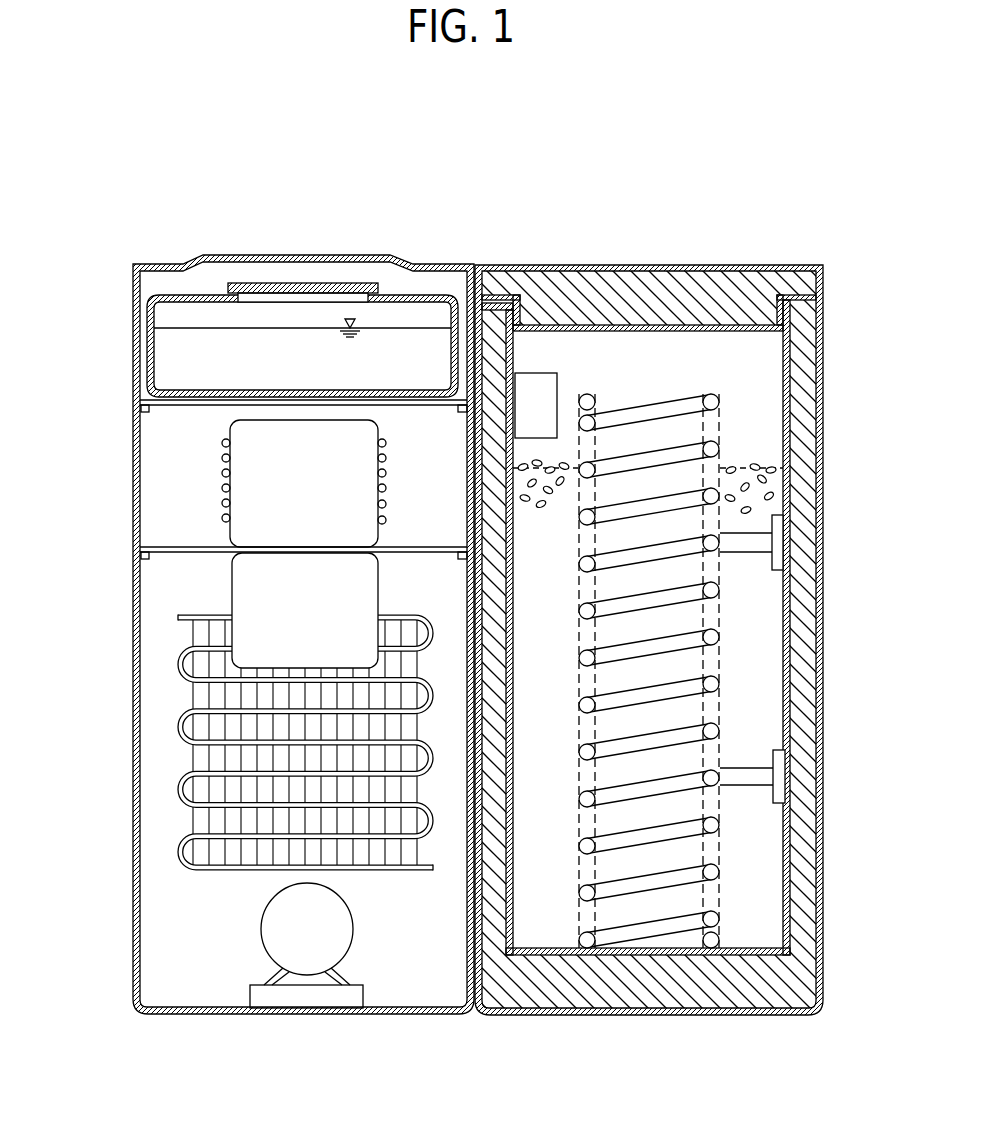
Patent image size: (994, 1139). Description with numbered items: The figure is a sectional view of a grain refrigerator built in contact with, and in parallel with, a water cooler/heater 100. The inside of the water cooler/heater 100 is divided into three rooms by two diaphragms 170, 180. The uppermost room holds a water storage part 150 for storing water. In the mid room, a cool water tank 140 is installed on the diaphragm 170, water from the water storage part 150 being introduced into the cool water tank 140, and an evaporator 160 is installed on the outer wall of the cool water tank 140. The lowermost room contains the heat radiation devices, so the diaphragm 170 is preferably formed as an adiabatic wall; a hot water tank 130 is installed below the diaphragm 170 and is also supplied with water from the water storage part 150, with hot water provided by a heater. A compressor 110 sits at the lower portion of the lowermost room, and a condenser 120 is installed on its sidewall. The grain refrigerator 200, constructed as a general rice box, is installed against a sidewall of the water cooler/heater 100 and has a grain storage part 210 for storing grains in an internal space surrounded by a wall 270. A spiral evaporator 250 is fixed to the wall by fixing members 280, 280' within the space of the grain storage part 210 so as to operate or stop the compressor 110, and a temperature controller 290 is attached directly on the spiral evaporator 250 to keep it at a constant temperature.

The water cooler/heater 100 is at (120, 655).
The compressor 110 is at (308, 958).
The condenser 120 is at (180, 784).
The hot water tank 130 is at (242, 593).
The cool water tank 140 is at (257, 493).
The water storage part 150 is at (173, 355).
The evaporator 160 is at (222, 445).
The diaphragm 170 is at (182, 547).
The diaphragm 180 is at (183, 403).
The grain refrigerator 200 is at (842, 655).
The grain storage part 210 is at (767, 613).
The spiral evaporator 250 is at (718, 397).
The wall 270 is at (800, 468).
The fixing member 280 is at (808, 545).
The fixing member 280' is at (814, 779).
The temperature controller 290 is at (538, 388).